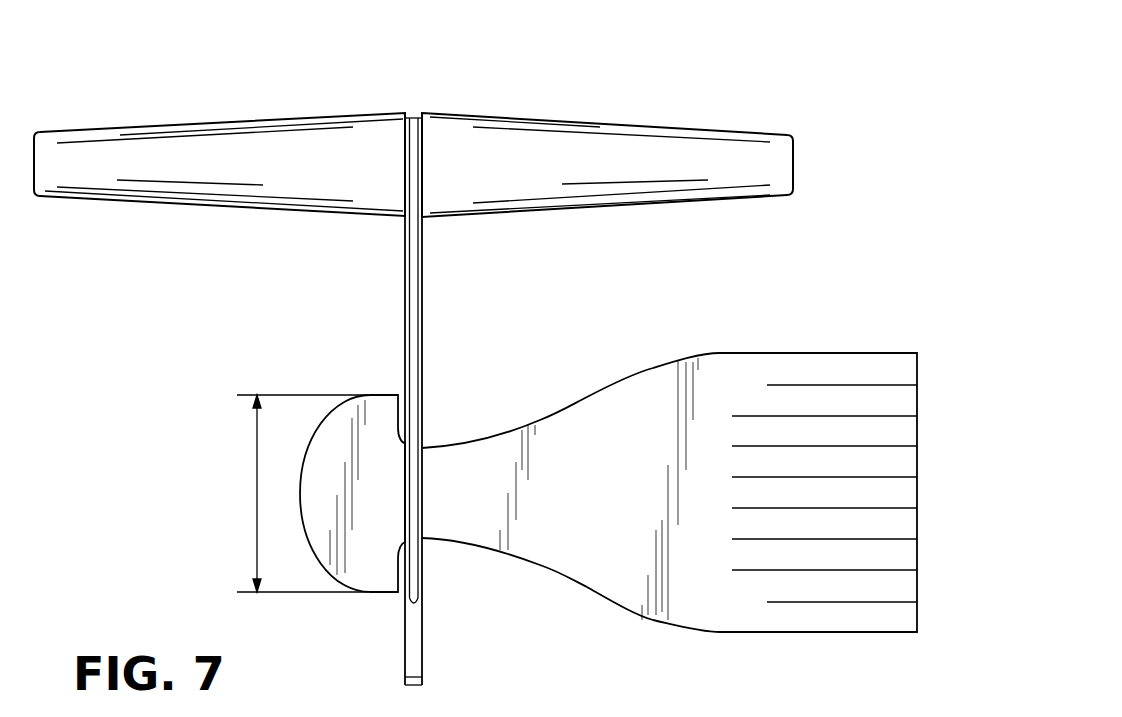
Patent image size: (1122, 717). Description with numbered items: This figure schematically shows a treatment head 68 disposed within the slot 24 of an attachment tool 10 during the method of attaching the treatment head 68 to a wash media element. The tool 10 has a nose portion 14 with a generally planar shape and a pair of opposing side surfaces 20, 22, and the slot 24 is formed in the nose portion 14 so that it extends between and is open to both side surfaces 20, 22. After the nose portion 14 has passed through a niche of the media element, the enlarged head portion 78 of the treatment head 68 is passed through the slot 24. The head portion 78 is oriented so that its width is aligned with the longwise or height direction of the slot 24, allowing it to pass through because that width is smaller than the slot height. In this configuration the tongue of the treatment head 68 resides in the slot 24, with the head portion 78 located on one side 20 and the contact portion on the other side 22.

The tool 10 is at (547, 106).
The nose portion 14 is at (422, 345).
The side surface 20 is at (405, 302).
The side surface 22 is at (422, 258).
The slot 24 is at (422, 557).
The treatment head 68 is at (657, 365).
The head portion 78 is at (322, 527).